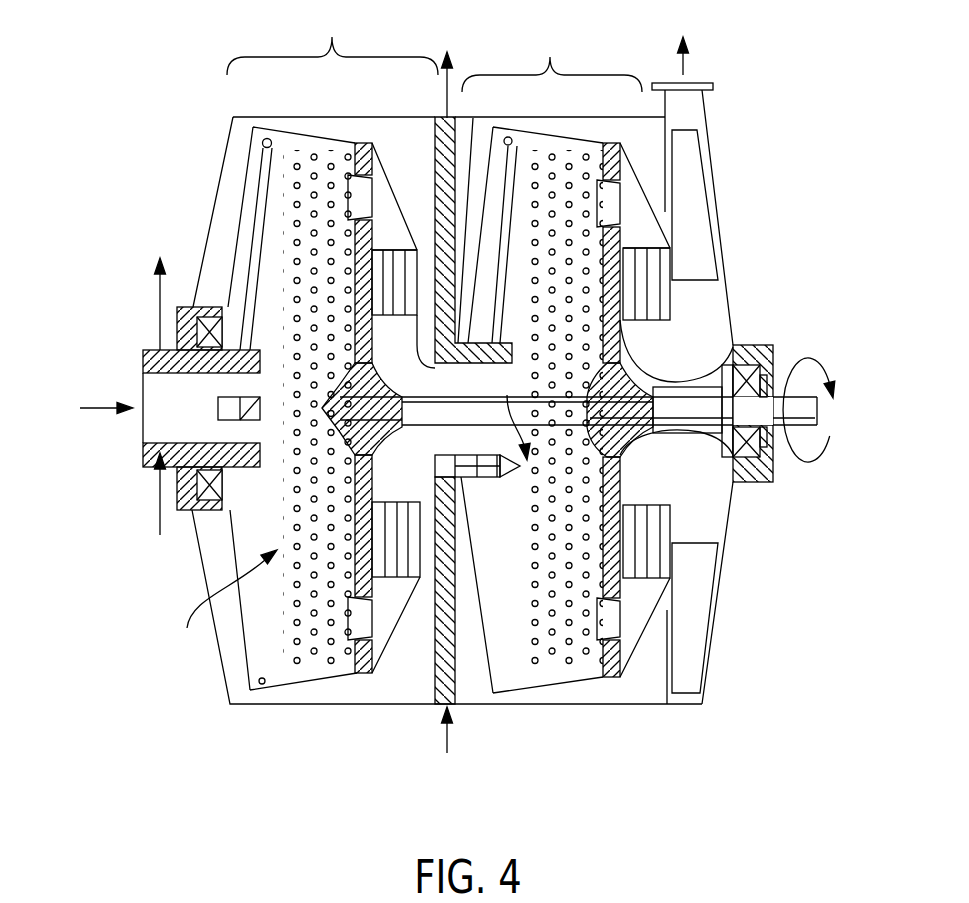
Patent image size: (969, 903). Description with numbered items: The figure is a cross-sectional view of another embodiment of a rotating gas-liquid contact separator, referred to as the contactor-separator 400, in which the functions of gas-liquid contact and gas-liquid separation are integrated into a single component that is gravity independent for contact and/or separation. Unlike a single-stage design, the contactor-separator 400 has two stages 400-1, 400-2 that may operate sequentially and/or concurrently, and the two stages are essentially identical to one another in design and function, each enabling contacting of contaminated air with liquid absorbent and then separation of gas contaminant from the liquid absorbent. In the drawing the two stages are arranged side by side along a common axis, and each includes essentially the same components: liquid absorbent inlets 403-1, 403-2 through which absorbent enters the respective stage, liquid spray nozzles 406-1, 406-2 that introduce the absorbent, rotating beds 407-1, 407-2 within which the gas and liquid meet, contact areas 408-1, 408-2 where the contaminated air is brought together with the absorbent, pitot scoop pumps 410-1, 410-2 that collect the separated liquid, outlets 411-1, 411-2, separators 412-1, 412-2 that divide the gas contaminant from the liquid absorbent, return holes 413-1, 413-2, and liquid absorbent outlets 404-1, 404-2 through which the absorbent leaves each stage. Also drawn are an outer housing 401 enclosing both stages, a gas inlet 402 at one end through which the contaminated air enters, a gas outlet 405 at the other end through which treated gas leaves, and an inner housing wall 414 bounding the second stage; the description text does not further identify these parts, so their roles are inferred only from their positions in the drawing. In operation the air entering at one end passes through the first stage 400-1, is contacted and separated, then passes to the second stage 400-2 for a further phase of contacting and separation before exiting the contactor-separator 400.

The contactor-separator 400 is at (125, 172).
The first stage 400-1 is at (332, 38).
The second stage 400-2 is at (552, 58).
The housing 401 is at (250, 705).
The inlet 402 is at (153, 390).
The first liquid absorbent inlet 403-1 is at (160, 503).
The second liquid absorbent inlet 403-2 is at (450, 740).
The first liquid absorbent outlet 404-1 is at (160, 297).
The second liquid absorbent outlet 404-2 is at (450, 95).
The outlet 405 is at (703, 102).
The first liquid spray nozzle 406-1 is at (197, 508).
The second liquid spray nozzle 406-2 is at (520, 470).
The first rotating bed 407-1 is at (293, 213).
The second rotating bed 407-2 is at (578, 167).
The first contact area 408-1 is at (219, 606).
The second contact area 408-2 is at (507, 415).
The first pitot scoop pump 410-1 is at (270, 136).
The second pitot scoop pump 410-2 is at (510, 135).
The first outlet 411-1 is at (358, 195).
The second outlet 411-2 is at (607, 210).
The first separator 412-1 is at (390, 507).
The second separator 412-2 is at (640, 513).
The first return hole 413-1 is at (358, 677).
The second return hole 413-2 is at (612, 672).
The inner housing wall 414 is at (690, 680).